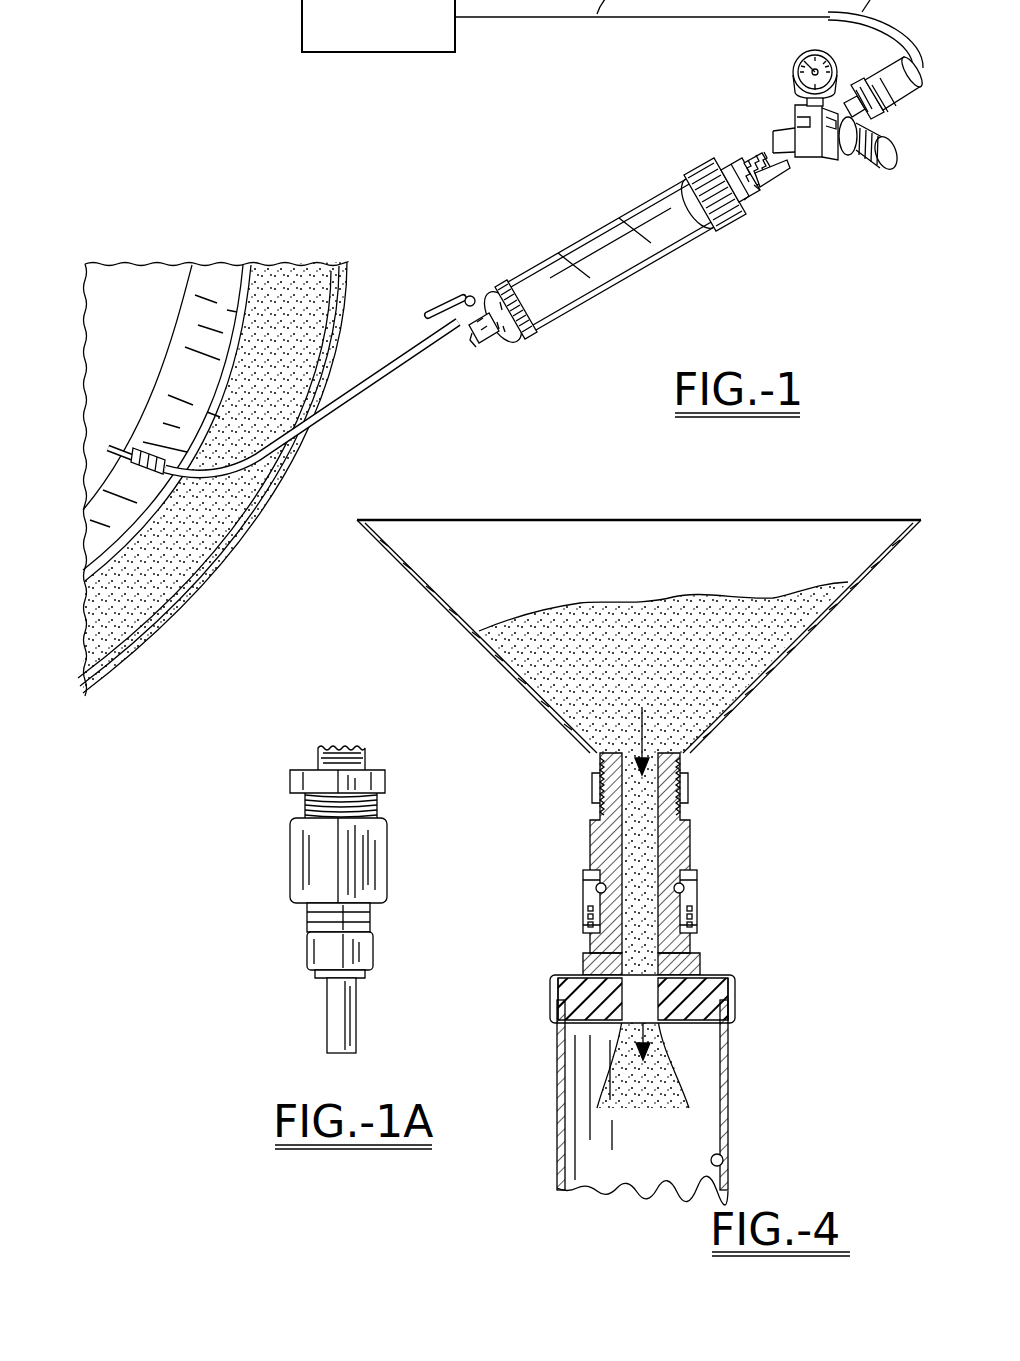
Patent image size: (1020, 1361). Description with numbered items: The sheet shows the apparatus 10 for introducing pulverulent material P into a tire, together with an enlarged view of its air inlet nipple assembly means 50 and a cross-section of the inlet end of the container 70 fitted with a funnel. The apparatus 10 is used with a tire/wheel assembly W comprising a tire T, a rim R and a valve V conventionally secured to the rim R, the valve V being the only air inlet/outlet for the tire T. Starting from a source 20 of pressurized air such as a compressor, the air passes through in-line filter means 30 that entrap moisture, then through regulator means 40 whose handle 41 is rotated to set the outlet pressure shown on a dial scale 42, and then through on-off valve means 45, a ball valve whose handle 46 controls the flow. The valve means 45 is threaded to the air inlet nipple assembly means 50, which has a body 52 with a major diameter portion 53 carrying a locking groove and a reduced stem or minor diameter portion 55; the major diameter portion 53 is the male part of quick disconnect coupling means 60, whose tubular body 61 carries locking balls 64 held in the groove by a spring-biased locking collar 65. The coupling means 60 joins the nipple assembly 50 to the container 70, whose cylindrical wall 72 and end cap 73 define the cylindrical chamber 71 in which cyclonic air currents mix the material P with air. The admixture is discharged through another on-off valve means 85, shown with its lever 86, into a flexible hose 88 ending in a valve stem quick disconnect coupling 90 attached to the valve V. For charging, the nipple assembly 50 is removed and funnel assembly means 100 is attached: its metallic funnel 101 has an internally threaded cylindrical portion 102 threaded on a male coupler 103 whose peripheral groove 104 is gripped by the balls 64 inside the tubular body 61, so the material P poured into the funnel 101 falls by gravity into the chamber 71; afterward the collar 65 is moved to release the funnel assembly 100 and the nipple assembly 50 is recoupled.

In FIG. 1, the apparatus 10 is at (706, 284).
In FIG. 1, the source of pressurized air 20 is at (396, 38).
In FIG. 1, the in-line filter means 30 is at (888, 70).
In FIG. 1, the regulator means 40 is at (877, 173).
In FIG. 1, the handle 41 is at (884, 165).
In FIG. 1, the dial scale 42 is at (795, 62).
In FIG. 1, the on-off valve means 45 is at (783, 128).
In FIG. 1, the handle 46 is at (770, 190).
In FIG. 1, the air inlet nipple assembly means 50 is at (737, 160).
In FIG. 1A, the air inlet nipple assembly means 50 is at (277, 899).
In FIG. 1A, the body 52 is at (291, 856).
In FIG. 1A, the major diameter portion 53 is at (308, 948).
In FIG. 1A, the minor diameter portion 55 is at (328, 1008).
In FIG. 1, the quick disconnect coupling means 60 is at (690, 170).
In FIG. 4, the quick disconnect coupling means 60 is at (583, 876).
In FIG. 4, the tubular body 61 is at (586, 925).
In FIG. 4, the locking balls 64 is at (596, 890).
In FIG. 1, the locking collar 65 is at (745, 200).
In FIG. 4, the locking collar 65 is at (641, 890).
In FIG. 1, the container 70 is at (604, 292).
In FIG. 4, the container 70 is at (720, 1102).
In FIG. 4, the cylindrical chamber 71 is at (764, 1161).
In FIG. 4, the cylindrical wall 72 is at (725, 1140).
In FIG. 4, the end cap 73 is at (740, 993).
In FIG. 1, the on-off valve means 85 is at (476, 338).
In FIG. 1, the outlet valve lever 86 is at (434, 310).
In FIG. 1, the flexible hose 88 is at (343, 410).
In FIG. 1, the valve stem quick disconnect coupling 90 is at (159, 462).
In FIG. 4, the funnel assembly means 100 is at (632, 777).
In FIG. 4, the funnel 101 is at (432, 602).
In FIG. 4, the internally threaded cylindrical portion 102 is at (690, 778).
In FIG. 4, the male coupler 103 is at (697, 913).
In FIG. 4, the peripheral groove 104 is at (686, 889).
In FIG. 4, the pulverulent material P is at (648, 681).
In FIG. 1, the tire/wheel assembly W is at (166, 250).
In FIG. 1, the rim R is at (210, 276).
In FIG. 1, the tire T is at (306, 270).
In FIG. 1, the valve V is at (128, 445).